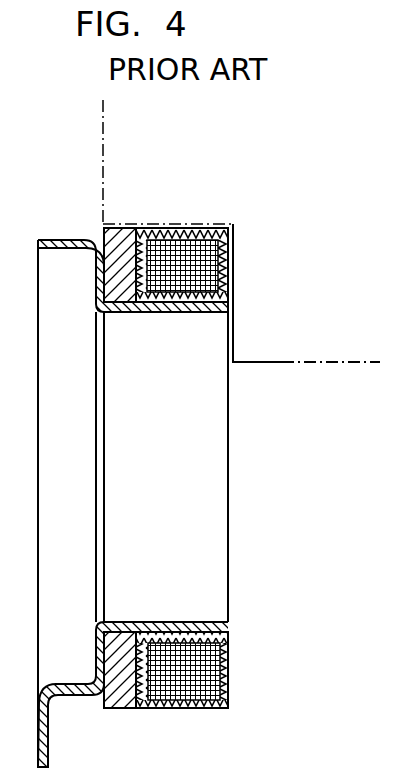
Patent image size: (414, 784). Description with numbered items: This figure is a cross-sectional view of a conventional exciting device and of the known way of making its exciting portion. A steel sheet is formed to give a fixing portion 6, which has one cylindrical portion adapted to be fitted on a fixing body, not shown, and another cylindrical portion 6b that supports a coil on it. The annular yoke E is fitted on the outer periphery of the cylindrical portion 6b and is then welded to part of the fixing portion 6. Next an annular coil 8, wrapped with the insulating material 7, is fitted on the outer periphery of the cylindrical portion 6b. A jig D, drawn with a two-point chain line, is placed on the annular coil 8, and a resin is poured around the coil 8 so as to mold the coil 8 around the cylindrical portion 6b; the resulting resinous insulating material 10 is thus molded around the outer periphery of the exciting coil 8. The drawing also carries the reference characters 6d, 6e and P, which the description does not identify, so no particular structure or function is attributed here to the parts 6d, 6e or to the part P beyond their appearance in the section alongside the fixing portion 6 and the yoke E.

The fixing portion 6 is at (130, 313).
The cylindrical portion 6b is at (187, 313).
The flange portion of bobbin 6d is at (73, 240).
The wall portion of bobbin 6e is at (93, 290).
The insulating material 7 is at (229, 300).
The annular coil 8 is at (232, 266).
The resinous insulating material 10 is at (216, 226).
The pole plate P is at (85, 262).
The annular yoke E is at (123, 232).
The jig D is at (148, 185).